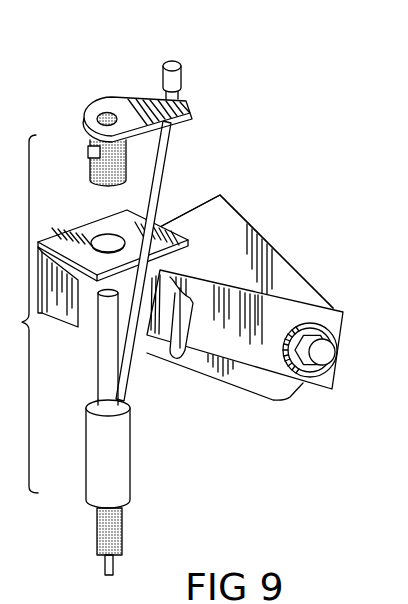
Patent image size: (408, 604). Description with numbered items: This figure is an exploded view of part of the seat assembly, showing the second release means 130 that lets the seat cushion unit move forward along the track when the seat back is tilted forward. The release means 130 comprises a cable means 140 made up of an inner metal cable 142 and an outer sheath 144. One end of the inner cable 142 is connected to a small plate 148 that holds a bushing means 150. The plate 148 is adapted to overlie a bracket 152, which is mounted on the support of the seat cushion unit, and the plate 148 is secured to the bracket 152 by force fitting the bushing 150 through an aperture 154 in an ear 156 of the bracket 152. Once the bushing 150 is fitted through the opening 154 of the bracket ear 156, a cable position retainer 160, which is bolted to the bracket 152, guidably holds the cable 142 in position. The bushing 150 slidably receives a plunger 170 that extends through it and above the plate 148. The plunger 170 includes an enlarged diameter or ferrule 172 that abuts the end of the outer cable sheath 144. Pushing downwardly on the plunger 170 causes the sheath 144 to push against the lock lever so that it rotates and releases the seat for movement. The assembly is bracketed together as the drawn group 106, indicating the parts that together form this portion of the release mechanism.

The electrode assembly 106 is at (42, 369).
The second release means 130 is at (226, 189).
The cable means 140 is at (124, 524).
The inner metal cable 142 is at (166, 150).
The outer sheath 144 is at (115, 546).
The plate 148 is at (117, 103).
The bushing means 150 is at (95, 160).
The bracket 152 is at (233, 230).
The aperture 154 is at (111, 279).
The ear 156 is at (80, 318).
The cable position retainer 160 is at (277, 308).
The plunger 170 is at (104, 378).
The ferrule 172 is at (118, 450).